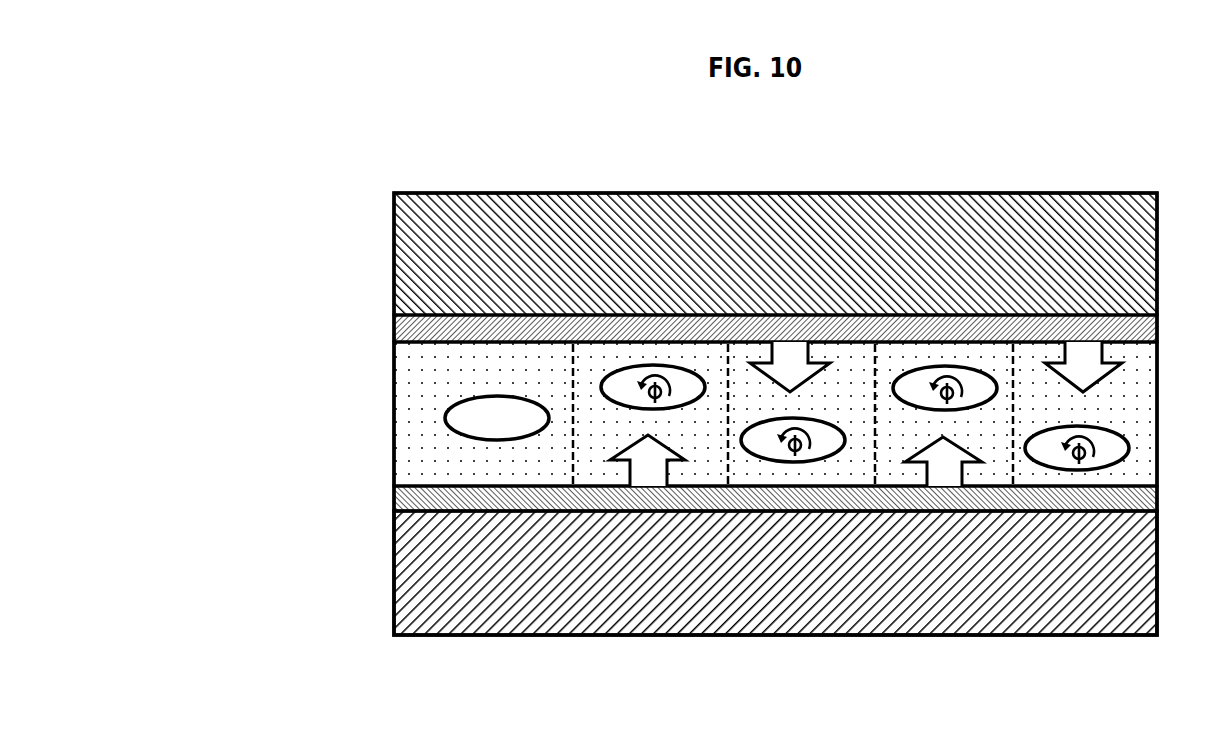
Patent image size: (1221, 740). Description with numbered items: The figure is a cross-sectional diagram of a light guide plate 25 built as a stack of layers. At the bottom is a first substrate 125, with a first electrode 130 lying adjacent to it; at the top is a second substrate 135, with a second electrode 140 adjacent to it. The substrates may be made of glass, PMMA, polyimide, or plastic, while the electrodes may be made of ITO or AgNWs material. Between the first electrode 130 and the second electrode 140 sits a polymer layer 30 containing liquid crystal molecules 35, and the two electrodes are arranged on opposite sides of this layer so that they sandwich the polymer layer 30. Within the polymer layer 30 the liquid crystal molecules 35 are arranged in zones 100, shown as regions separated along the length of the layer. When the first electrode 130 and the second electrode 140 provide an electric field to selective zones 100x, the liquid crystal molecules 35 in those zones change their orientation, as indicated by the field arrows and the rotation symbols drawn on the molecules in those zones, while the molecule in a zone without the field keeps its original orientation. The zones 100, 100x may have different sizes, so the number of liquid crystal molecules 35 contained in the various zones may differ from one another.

The light guide plate 25 is at (244, 228).
The polymer layer 30 is at (394, 423).
The liquid crystal molecules 35 is at (445, 413).
The zones 100 is at (498, 363).
The selective zones 100x is at (713, 440).
The first substrate 125 is at (394, 584).
The first electrode 130 is at (394, 495).
The second substrate 135 is at (394, 250).
The second electrode 140 is at (394, 328).